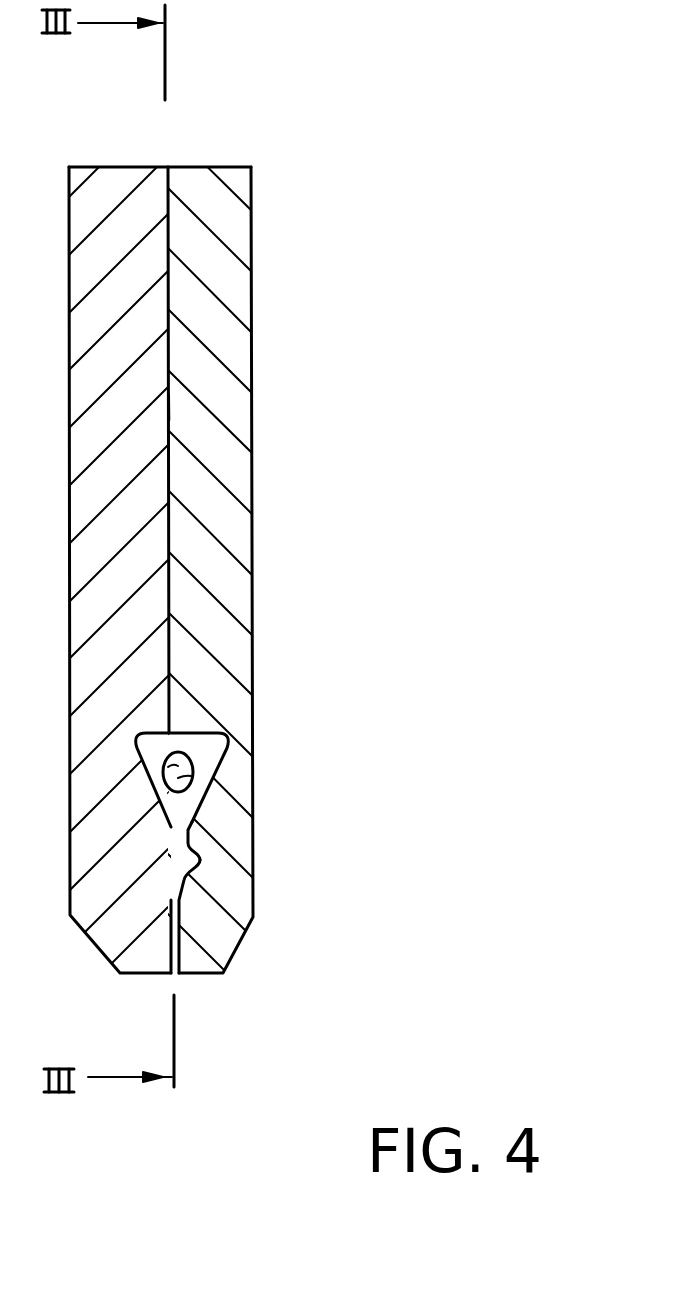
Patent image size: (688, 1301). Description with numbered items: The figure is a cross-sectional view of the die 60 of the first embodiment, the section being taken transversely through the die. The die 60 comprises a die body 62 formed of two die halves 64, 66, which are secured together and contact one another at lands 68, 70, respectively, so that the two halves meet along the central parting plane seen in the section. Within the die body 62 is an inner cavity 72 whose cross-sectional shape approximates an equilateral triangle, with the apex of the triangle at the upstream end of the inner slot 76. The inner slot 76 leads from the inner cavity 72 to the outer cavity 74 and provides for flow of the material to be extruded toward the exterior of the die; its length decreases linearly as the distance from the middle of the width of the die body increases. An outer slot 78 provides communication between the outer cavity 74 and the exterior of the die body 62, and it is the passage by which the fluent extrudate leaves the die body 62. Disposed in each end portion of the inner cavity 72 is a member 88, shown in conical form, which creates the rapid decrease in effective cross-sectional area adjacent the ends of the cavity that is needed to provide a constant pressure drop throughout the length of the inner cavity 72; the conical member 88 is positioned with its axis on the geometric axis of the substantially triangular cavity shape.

The die 60 is at (270, 115).
The die body 62 is at (108, 166).
The die half 64 is at (83, 226).
The die half 66 is at (253, 293).
The land 68 is at (167, 357).
The land 70 is at (168, 408).
The inner cavity 72 is at (153, 749).
The outer cavity 74 is at (182, 872).
The inner slot 76 is at (192, 838).
The outer slot 78 is at (179, 957).
The member 88 is at (188, 762).